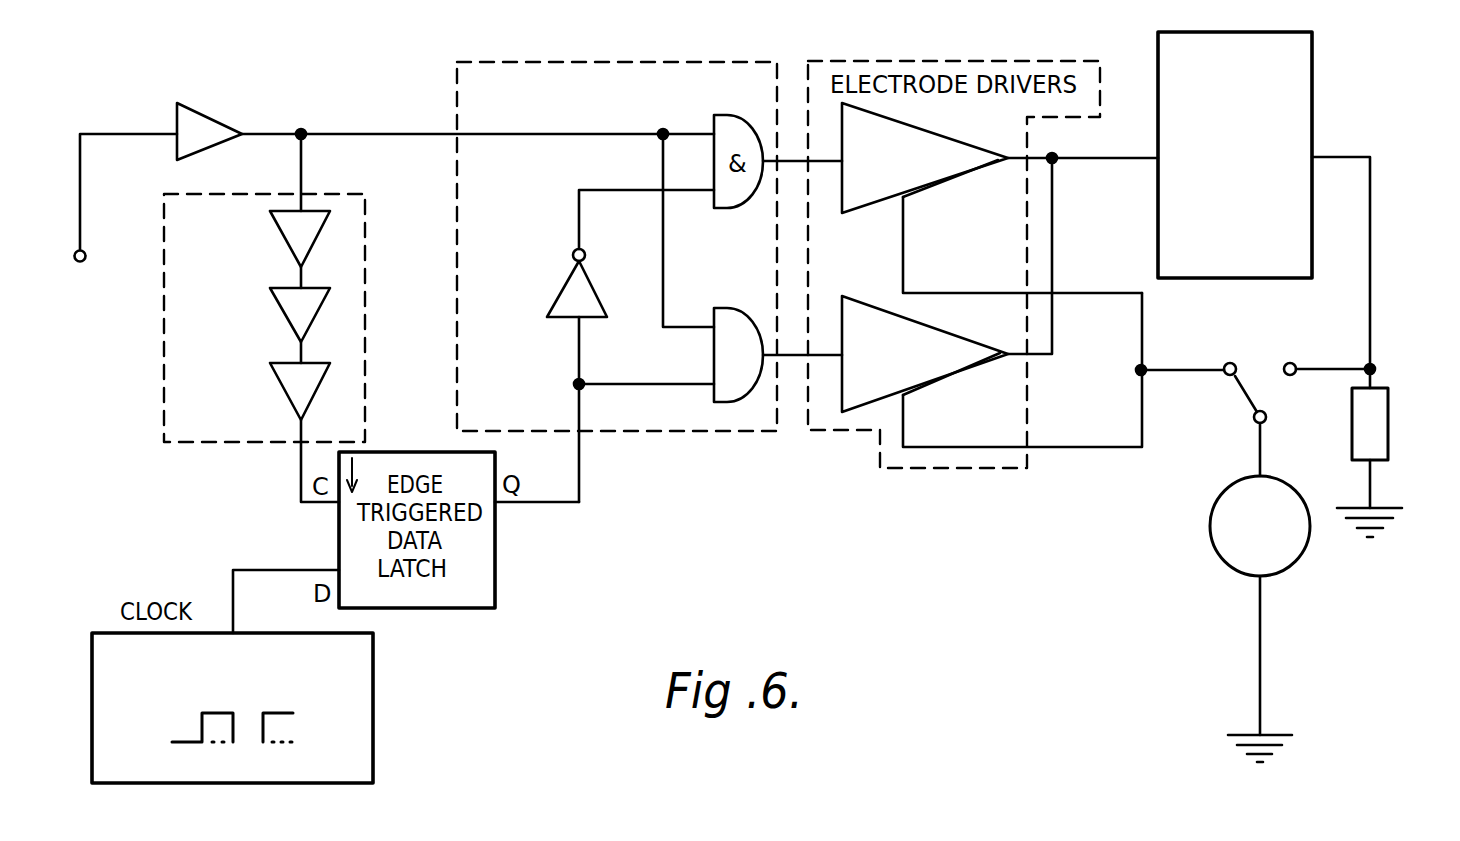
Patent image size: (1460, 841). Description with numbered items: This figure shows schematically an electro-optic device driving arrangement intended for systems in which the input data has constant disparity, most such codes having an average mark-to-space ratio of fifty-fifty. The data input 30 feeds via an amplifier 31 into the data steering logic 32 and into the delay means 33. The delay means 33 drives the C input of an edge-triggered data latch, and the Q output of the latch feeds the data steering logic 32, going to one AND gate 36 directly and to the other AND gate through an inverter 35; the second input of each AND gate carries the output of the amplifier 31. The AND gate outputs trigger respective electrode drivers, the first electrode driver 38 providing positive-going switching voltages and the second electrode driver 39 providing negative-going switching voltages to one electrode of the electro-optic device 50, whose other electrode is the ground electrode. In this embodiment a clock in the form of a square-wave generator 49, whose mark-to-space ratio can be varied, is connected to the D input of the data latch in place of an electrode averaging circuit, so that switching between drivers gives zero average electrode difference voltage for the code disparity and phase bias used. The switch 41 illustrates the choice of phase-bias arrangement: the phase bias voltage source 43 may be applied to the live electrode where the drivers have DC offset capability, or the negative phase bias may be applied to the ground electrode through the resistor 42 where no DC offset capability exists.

The data input 30 is at (85, 250).
The amplifier 31 is at (209, 118).
The data steering logic 32 is at (470, 87).
The delay means 33 is at (345, 238).
The inverter 35 is at (567, 302).
The first AND gate 36 is at (725, 388).
The first electrode driver 38 is at (980, 157).
The second electrode driver 39 is at (852, 395).
The switch S1 41 is at (1278, 332).
The resistor R 42 is at (1373, 435).
The phase bias voltage source V0 43 is at (1225, 520).
The square-wave generator 49 is at (353, 693).
The electro-optic device 50 is at (1292, 105).